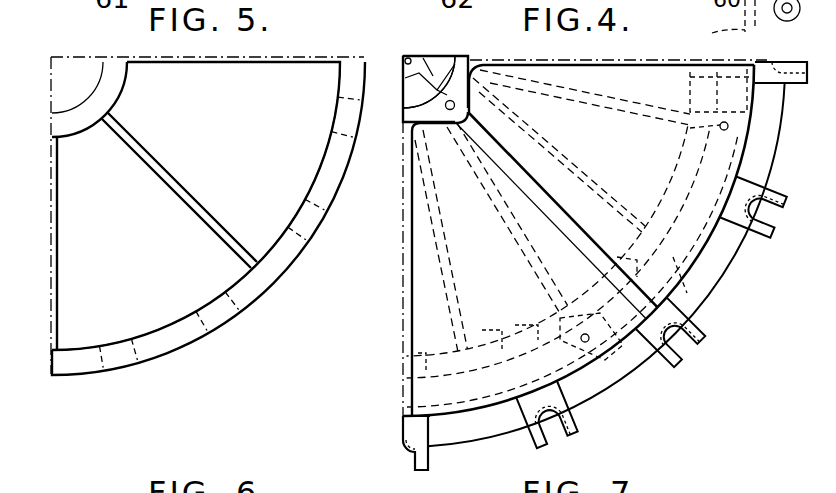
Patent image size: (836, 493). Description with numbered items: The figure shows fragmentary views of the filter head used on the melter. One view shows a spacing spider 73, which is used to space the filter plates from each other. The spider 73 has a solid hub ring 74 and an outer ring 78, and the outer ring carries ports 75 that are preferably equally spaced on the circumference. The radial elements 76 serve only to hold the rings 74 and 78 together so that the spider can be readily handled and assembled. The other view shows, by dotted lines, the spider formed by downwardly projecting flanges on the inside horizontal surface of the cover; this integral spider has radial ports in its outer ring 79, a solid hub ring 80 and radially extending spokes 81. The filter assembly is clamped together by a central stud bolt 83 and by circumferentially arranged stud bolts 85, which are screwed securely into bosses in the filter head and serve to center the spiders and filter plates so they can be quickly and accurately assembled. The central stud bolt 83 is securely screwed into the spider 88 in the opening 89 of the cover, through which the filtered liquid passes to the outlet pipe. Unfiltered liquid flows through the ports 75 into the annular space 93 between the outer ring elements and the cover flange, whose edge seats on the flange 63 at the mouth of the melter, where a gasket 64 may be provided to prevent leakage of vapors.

In FIG. 5, the spider 73 is at (251, 131).
In FIG. 5, the hub ring 74 is at (62, 118).
In FIG. 5, the ports 75 is at (180, 302).
In FIG. 4, the ports 75 is at (676, 182).
In FIG. 5, the radial elements 76 is at (144, 146).
In FIG. 5, the outer ring 78 is at (283, 257).
In FIG. 4, the outer ring 79 is at (486, 332).
In FIG. 4, the hub ring 80 is at (410, 138).
In FIG. 4, the spokes 81 is at (533, 263).
In FIG. 4, the stud bolts 85 is at (721, 126).
In FIG. 4, the spider 88 is at (430, 72).
In FIG. 4, the opening 89 is at (413, 101).
In FIG. 4, the annular space 93 is at (737, 66).
In FIG. 4, the flange 63 is at (781, 58).
In FIG. 5, the gasket 64 is at (47, 9).
In FIG. 4, the stud bolt 83 is at (390, 9).